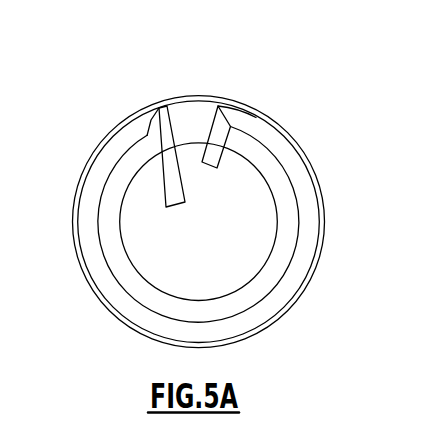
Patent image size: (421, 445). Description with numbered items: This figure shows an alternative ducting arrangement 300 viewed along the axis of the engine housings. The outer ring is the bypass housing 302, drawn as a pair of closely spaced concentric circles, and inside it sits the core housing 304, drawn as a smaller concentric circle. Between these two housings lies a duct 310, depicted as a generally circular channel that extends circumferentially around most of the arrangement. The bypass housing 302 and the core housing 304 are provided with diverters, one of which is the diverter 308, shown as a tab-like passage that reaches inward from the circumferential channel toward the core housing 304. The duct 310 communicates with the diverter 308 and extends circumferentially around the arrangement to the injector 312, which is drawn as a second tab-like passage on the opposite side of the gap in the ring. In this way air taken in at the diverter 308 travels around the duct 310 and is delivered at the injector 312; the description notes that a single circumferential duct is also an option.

The ducting arrangement 300 is at (137, 78).
The bypass housing 302 is at (78, 186).
The core housing 304 is at (180, 300).
The diverter 308 is at (212, 168).
The duct 310 is at (253, 125).
The injector 312 is at (176, 207).